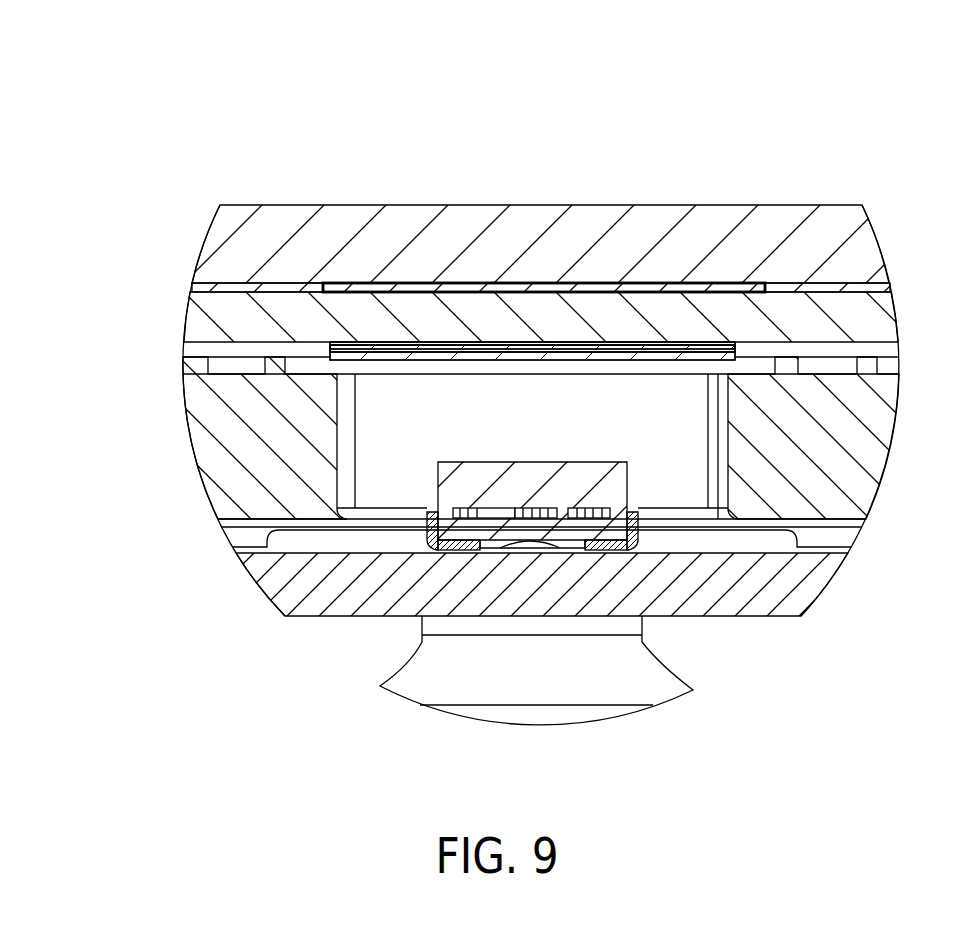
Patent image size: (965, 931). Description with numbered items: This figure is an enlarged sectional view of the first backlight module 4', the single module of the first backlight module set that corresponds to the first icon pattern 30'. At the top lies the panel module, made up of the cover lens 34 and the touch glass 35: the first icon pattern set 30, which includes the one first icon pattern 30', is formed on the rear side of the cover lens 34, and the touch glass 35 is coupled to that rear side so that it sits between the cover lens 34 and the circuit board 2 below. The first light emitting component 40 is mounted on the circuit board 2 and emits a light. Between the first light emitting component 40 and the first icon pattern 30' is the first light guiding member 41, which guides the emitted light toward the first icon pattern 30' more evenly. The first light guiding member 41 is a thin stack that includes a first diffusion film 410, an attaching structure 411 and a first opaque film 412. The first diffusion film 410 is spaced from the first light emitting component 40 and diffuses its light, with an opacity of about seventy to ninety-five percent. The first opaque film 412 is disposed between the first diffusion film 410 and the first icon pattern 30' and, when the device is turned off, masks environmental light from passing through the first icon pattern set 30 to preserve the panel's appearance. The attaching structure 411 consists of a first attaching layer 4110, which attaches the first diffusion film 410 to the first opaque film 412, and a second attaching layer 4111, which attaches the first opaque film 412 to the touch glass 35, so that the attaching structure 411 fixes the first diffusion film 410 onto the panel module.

The first backlight module 4' is at (567, 330).
The cover lens 34 is at (838, 215).
The touch glass 35 is at (786, 310).
The first icon pattern 30' is at (544, 215).
The first icon pattern set 30 is at (544, 287).
The first light guiding member 41 is at (328, 82).
The first diffusion film 410 is at (355, 350).
The attaching structure 411 is at (402, 137).
The first attaching layer 4110 is at (433, 350).
The second attaching layer 4111 is at (512, 350).
The first opaque film 412 is at (597, 352).
The first light emitting component 40 is at (547, 468).
The circuit board 2 is at (750, 606).